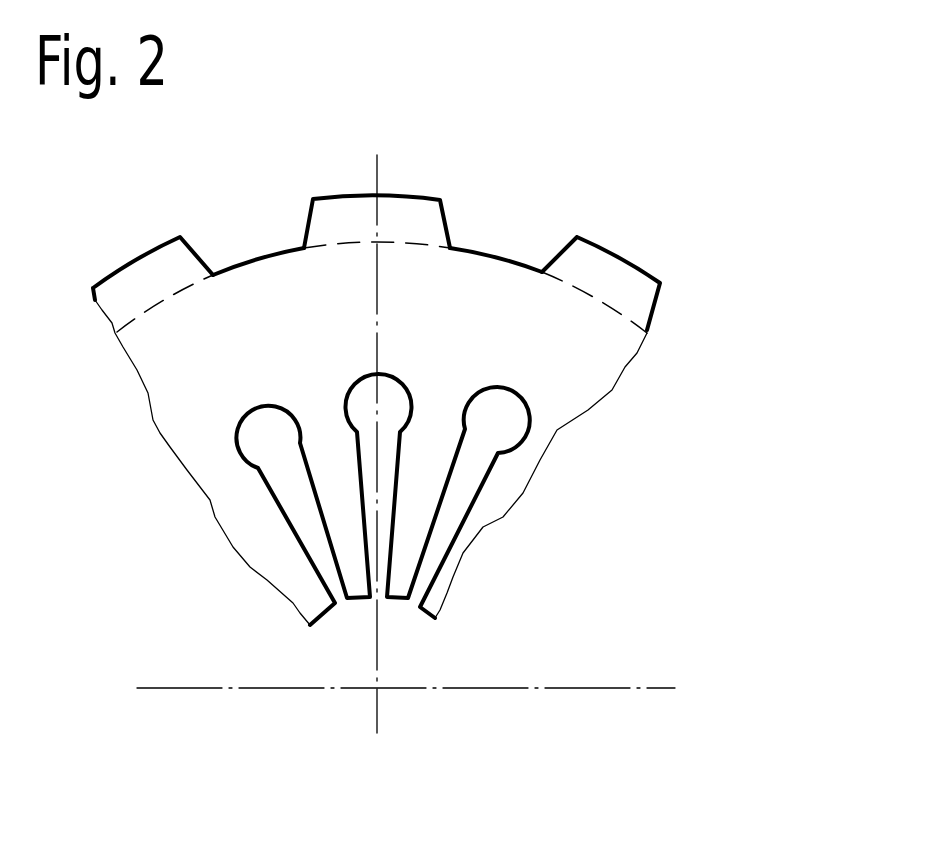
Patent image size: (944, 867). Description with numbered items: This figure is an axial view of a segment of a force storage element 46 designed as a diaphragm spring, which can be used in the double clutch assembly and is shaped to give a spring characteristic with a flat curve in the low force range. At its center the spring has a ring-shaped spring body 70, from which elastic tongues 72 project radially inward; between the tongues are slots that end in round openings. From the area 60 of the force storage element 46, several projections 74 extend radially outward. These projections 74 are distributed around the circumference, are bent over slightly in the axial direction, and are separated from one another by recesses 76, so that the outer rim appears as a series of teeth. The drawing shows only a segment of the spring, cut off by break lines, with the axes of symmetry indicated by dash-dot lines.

The force storage element 46 is at (555, 423).
The area of the force storage element 60 is at (448, 368).
The ring-shaped spring body 70 is at (618, 357).
The elastic tongues 72 is at (480, 524).
The projections 74 is at (445, 212).
The recesses 76 is at (537, 228).